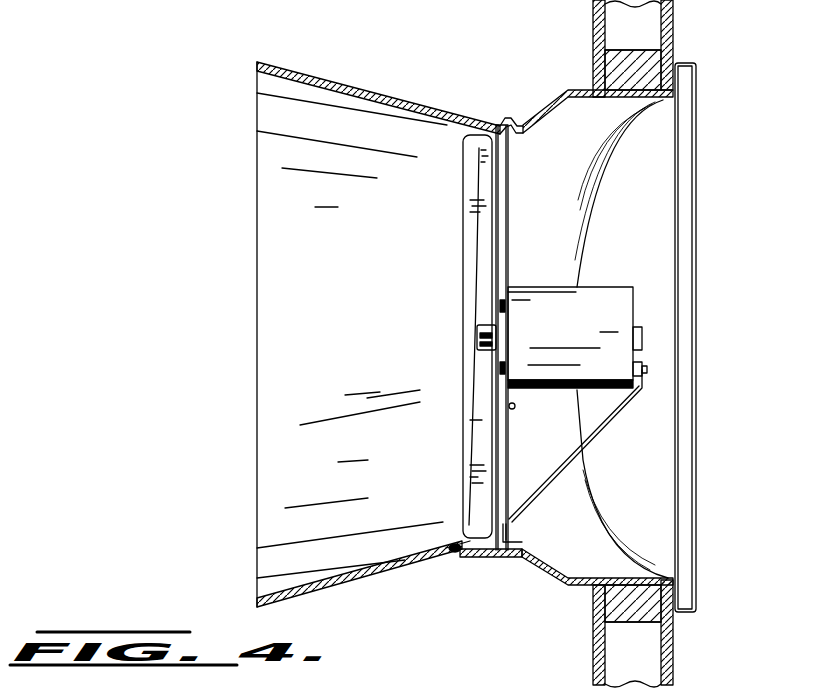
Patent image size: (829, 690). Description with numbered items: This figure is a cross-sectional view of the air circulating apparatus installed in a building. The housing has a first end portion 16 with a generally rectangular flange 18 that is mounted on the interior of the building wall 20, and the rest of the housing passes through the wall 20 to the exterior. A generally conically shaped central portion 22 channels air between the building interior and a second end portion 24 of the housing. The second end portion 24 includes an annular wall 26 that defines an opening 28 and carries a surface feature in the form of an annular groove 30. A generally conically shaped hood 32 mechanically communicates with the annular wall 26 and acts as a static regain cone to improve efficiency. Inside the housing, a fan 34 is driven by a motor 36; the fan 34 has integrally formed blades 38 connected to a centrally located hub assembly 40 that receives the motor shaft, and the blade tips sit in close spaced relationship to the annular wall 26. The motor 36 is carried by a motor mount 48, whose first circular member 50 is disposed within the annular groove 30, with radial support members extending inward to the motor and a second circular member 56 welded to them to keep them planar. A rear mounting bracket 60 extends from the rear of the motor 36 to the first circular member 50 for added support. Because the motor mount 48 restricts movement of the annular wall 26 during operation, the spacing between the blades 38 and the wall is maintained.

The first end portion 16 is at (700, 618).
The flange 18 is at (695, 603).
The wall 20 is at (673, 660).
The central portion 22 is at (553, 102).
The second end portion 24 is at (499, 121).
The annular wall 26 is at (481, 548).
The opening 28 is at (433, 565).
The annular groove 30 is at (509, 553).
The hood 32 is at (334, 586).
The fan 34 is at (483, 480).
The motor 36 is at (617, 312).
The blades 38 is at (483, 180).
The hub assembly 40 is at (480, 344).
The motor mount 48 is at (520, 533).
The first circular member 50 is at (512, 436).
The second circular member 56 is at (517, 406).
The rear mounting bracket 60 is at (560, 484).